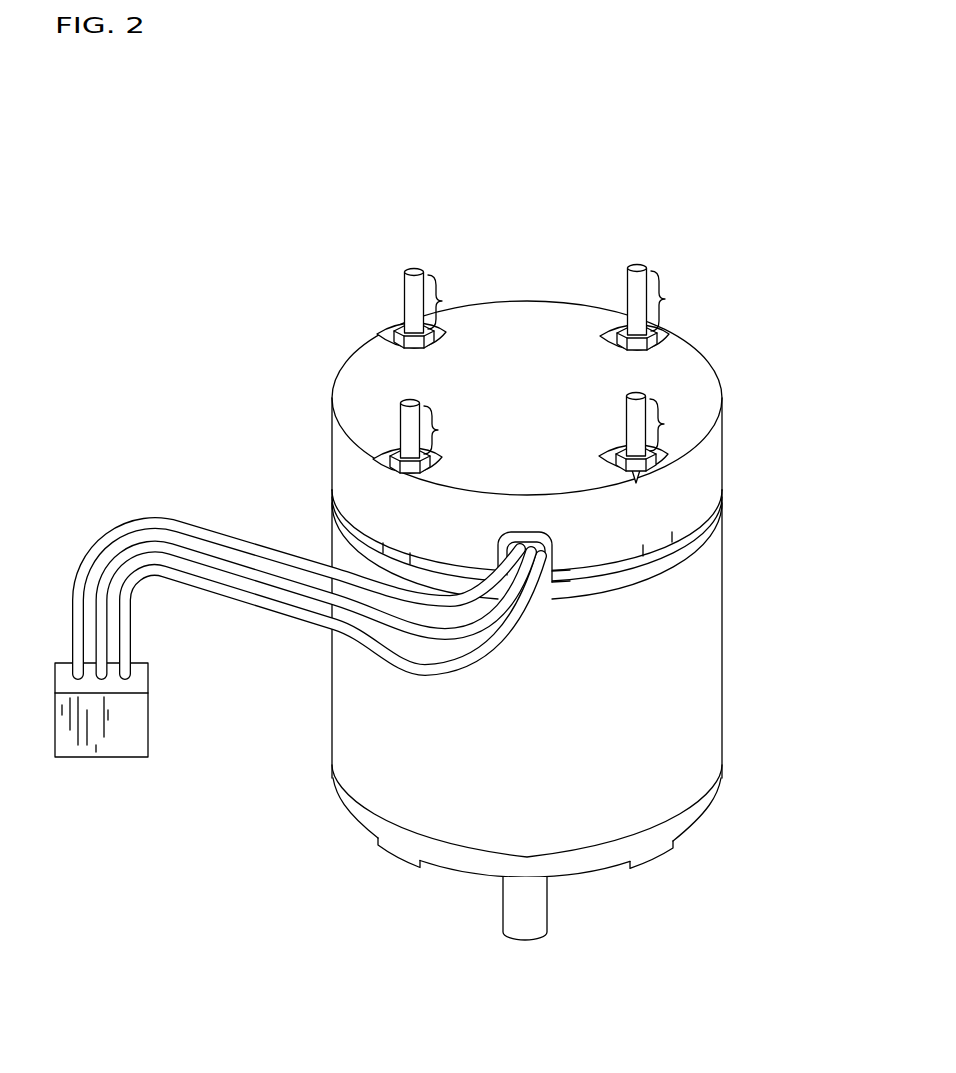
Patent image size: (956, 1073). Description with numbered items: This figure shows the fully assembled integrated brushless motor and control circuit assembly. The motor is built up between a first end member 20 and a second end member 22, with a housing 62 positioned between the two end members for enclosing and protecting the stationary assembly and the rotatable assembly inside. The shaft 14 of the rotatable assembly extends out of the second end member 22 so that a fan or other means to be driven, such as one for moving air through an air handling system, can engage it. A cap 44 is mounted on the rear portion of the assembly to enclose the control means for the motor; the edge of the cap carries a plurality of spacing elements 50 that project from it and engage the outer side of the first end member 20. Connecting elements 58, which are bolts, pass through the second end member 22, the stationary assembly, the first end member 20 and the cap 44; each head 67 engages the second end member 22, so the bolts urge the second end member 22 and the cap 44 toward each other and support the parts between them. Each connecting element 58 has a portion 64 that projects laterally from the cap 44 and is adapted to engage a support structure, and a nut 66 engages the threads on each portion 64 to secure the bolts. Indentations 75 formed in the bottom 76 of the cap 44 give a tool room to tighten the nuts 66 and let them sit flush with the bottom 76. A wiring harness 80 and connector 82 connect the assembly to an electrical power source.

The shaft 14 is at (549, 907).
The first end member 20 is at (722, 509).
The second end member 22 is at (697, 818).
The cap 44 is at (710, 462).
The spacing elements 50 is at (415, 579).
The connecting elements 58 is at (404, 291).
The housing 62 is at (710, 640).
The portion 64 is at (562, 362).
The nut 66 is at (395, 334).
The head 67 is at (400, 848).
The indentations 75 is at (392, 345).
The bottom 76 is at (357, 376).
The wiring harness 80 is at (186, 550).
The connector 82 is at (108, 740).